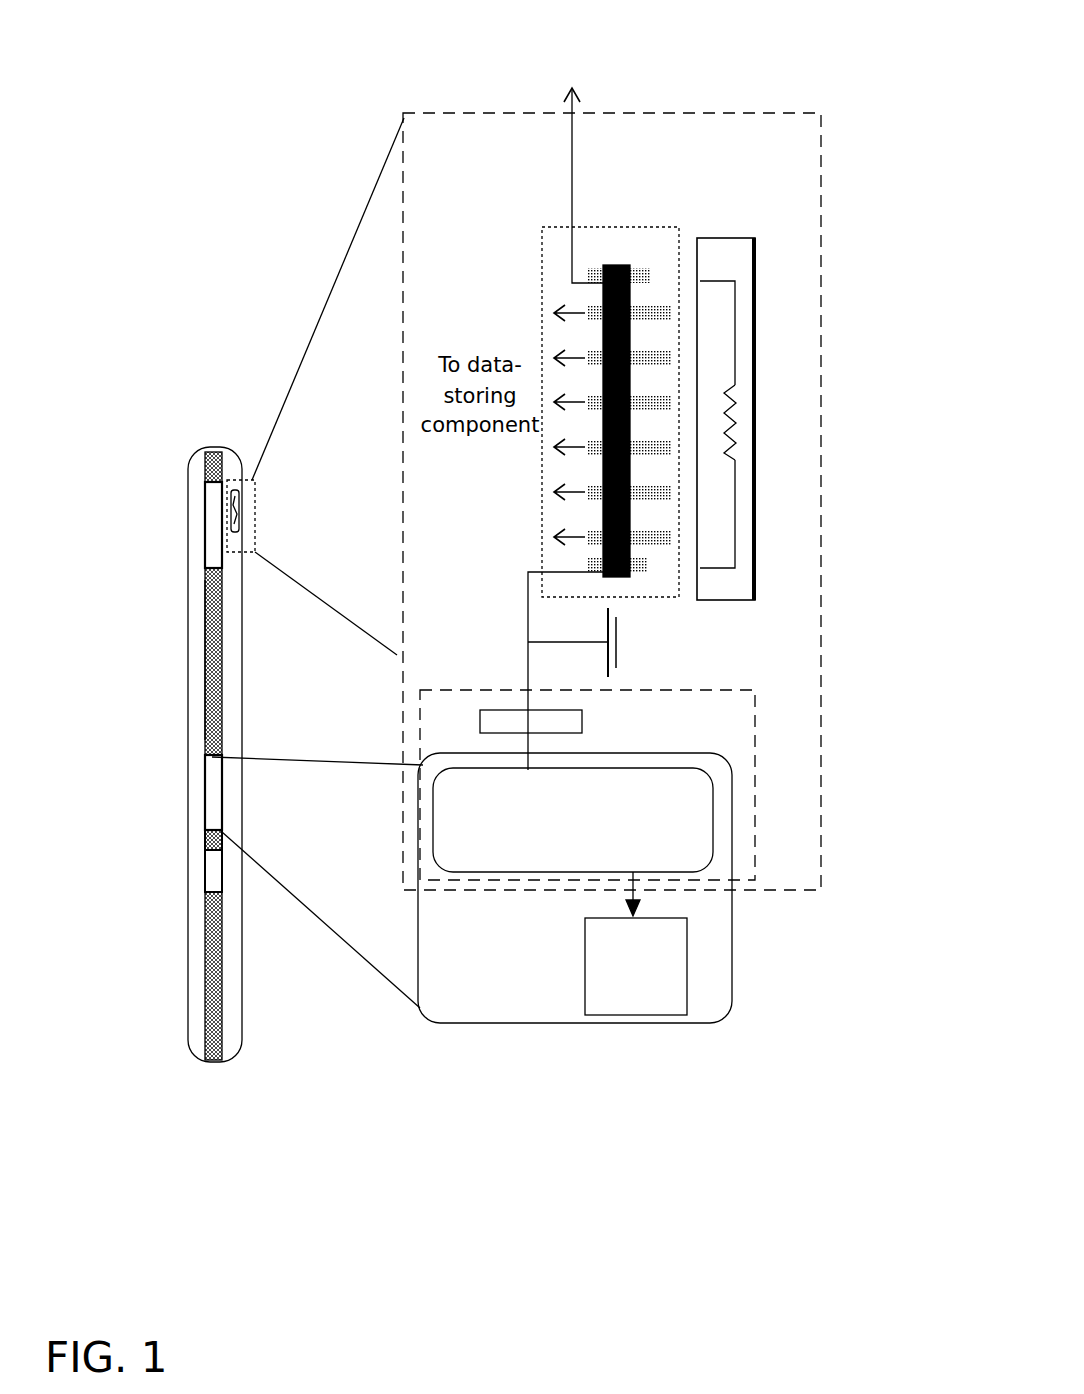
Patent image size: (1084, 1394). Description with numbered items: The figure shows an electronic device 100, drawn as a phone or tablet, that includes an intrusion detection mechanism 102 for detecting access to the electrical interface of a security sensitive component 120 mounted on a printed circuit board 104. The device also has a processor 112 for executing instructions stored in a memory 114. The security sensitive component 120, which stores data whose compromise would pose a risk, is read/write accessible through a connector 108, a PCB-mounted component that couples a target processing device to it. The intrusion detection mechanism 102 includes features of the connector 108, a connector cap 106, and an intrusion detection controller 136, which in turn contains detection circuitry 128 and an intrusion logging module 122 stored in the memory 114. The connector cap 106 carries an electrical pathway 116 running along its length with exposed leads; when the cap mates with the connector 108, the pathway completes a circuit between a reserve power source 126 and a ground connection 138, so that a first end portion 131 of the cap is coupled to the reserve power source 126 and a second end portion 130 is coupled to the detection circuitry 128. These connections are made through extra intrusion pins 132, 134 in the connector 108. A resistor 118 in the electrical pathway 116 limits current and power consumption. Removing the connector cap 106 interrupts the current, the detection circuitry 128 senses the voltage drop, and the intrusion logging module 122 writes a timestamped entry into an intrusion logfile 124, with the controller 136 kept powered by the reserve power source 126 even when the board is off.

The electronic device 100 is at (155, 362).
The intrusion detection mechanism 102 is at (822, 683).
The printed circuit board 104 is at (205, 710).
The connector cap 106 is at (757, 425).
The connector 108 is at (230, 480).
The processor 112 is at (205, 870).
The memory 114 is at (205, 798).
The electrical pathway 116 is at (737, 515).
The resistor 118 is at (722, 393).
The security sensitive component 120 is at (204, 490).
The intrusion logging module 122 is at (554, 861).
The intrusion logfile 124 is at (618, 992).
The reserve power source 126 is at (565, 64).
The detection circuitry 128 is at (582, 722).
The second end portion 130 is at (715, 570).
The first end portion 131 is at (712, 281).
The intrusion pin 132 is at (650, 275).
The intrusion pin 134 is at (645, 578).
The intrusion detection controller 136 is at (755, 786).
The ground connection 138 is at (618, 652).